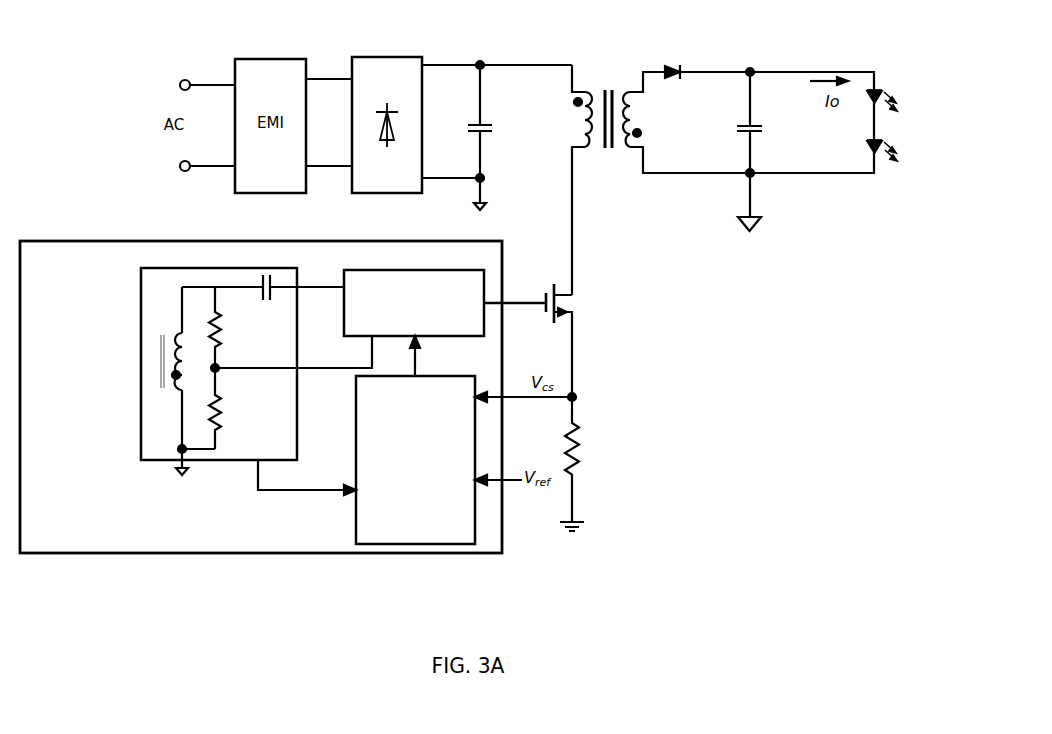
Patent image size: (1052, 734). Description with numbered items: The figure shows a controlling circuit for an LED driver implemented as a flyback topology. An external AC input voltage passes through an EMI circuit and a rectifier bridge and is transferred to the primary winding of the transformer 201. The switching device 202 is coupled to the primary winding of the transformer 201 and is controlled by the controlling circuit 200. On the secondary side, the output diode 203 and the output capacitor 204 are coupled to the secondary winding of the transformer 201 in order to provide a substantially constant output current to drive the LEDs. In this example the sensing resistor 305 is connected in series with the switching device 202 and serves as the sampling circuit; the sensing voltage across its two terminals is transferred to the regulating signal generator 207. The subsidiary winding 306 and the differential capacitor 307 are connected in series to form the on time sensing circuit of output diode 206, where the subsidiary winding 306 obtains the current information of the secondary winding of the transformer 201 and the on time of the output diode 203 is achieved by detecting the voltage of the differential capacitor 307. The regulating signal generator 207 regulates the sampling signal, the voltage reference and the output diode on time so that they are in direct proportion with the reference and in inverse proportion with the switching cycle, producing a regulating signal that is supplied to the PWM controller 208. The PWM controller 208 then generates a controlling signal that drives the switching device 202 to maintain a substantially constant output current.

The controlling circuit 200 is at (130, 535).
The transformer 201 is at (649, 180).
The switching device 202 is at (544, 340).
The output diode 203 is at (707, 60).
The output capacitor 204 is at (767, 149).
The on time sensing circuit of output diode 206 is at (201, 371).
The regulating signal generator 207 is at (401, 521).
The PWM controller 208 is at (474, 311).
The sensing resistor 305 is at (607, 464).
The subsidiary winding 306 is at (164, 353).
The differential capacitor 307 is at (269, 299).